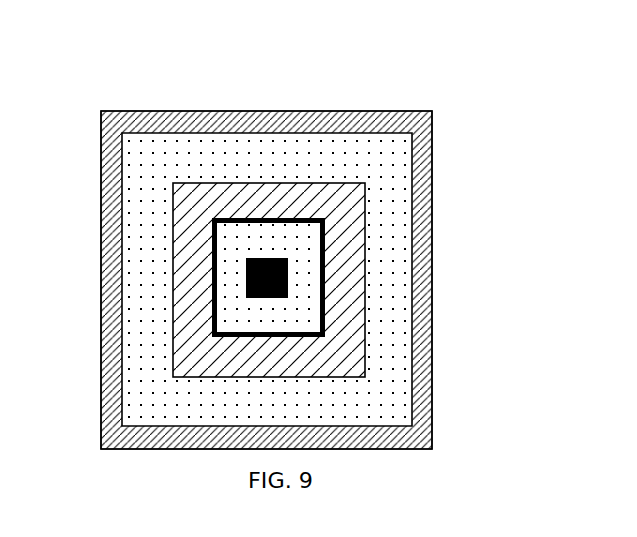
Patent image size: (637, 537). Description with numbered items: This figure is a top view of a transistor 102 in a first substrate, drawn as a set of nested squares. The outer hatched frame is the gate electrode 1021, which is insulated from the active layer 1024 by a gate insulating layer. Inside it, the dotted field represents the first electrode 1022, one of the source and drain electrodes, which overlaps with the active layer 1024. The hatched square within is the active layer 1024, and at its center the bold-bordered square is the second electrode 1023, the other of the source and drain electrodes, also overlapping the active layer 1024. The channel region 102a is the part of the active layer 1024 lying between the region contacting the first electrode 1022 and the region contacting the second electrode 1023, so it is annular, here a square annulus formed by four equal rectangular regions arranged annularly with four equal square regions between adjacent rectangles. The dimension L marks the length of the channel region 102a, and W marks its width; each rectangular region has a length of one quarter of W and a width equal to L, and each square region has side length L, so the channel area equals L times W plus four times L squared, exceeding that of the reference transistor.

The transistor 102 is at (98, 40).
The channel region 102a is at (106, 305).
The gate electrode 1021 is at (428, 377).
The first electrode 1022 is at (396, 192).
The second electrode 1023 is at (301, 301).
The active layer 1024 is at (347, 237).
The length of the channel region L is at (213, 243).
The width of the channel region W is at (331, 229).